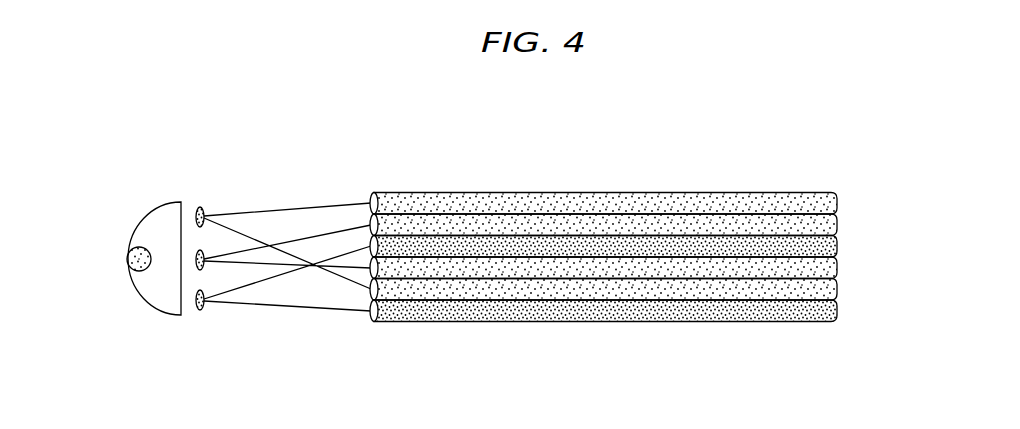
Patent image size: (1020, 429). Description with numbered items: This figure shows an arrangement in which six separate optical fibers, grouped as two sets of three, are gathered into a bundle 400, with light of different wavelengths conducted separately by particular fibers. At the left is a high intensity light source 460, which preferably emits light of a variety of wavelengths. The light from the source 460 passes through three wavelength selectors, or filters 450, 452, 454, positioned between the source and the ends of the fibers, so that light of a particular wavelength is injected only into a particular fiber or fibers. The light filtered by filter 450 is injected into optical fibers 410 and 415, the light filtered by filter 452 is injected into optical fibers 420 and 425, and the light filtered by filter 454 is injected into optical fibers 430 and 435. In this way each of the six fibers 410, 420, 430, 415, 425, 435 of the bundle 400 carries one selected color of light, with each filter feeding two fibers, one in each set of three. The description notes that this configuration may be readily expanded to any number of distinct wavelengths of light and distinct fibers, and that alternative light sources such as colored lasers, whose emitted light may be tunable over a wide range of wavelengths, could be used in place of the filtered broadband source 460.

The bundle 400 is at (672, 254).
The optical fiber 410 is at (838, 200).
The optical fiber 420 is at (838, 221).
The optical fiber 430 is at (838, 243).
The optical fiber 415 is at (838, 264).
The optical fiber 425 is at (838, 286).
The optical fiber 435 is at (644, 308).
The wavelength selector (filter) 450 is at (199, 207).
The wavelength selector (filter) 452 is at (197, 270).
The wavelength selector (filter) 454 is at (203, 310).
The high intensity light source 460 is at (137, 227).